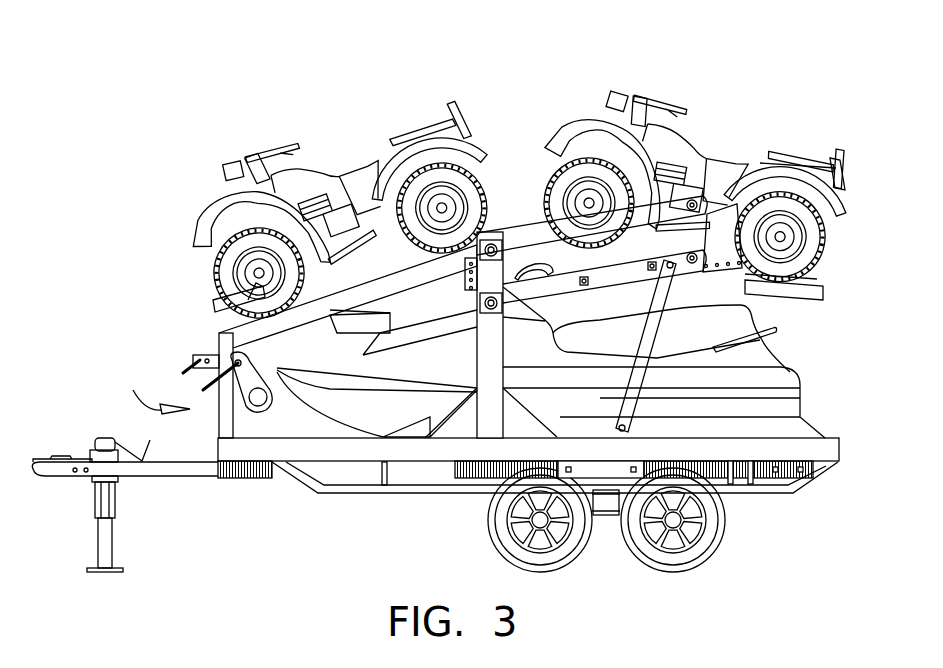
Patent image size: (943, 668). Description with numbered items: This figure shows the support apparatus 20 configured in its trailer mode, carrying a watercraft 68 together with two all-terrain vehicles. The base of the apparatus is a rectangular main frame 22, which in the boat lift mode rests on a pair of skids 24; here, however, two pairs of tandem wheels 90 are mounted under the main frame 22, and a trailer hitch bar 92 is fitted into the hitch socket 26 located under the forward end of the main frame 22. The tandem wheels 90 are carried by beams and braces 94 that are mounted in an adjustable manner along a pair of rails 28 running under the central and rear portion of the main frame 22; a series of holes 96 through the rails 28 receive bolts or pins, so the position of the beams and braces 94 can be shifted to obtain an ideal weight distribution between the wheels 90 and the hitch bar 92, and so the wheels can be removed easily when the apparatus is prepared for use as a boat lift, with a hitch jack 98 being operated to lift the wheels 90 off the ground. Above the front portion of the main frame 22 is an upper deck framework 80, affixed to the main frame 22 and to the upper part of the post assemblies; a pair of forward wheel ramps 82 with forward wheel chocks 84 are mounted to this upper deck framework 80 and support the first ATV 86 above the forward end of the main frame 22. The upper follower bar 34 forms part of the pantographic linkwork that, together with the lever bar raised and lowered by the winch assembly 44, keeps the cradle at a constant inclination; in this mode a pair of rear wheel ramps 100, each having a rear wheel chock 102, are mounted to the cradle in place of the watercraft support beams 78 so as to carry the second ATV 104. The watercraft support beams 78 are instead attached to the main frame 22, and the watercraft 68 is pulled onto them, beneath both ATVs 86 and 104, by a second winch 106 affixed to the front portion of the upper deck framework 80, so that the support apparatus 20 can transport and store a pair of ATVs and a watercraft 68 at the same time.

The support apparatus 20 is at (177, 82).
The main frame 22 is at (357, 450).
The skids 24 is at (327, 495).
The hitch socket 26 is at (248, 478).
The rails 28 is at (457, 470).
The upper follower bar 34 is at (505, 232).
The winch assembly 44 is at (151, 384).
The watercraft 68 is at (798, 367).
The watercraft support beams 78 is at (813, 463).
The upper deck framework 80 is at (230, 327).
The forward wheel ramps 82 is at (498, 232).
The forward wheel chocks 84 is at (215, 300).
The ATV 86 is at (344, 174).
The tandem wheels 90 is at (693, 567).
The trailer hitch bar 92 is at (172, 478).
The beams and braces 94 is at (613, 517).
The holes 96 is at (748, 470).
The hitch jack 98 is at (93, 500).
The rear wheel ramps 100 is at (814, 302).
The rear wheel chock 102 is at (823, 265).
The second ATV 104 is at (712, 145).
The second winch 106 is at (190, 355).